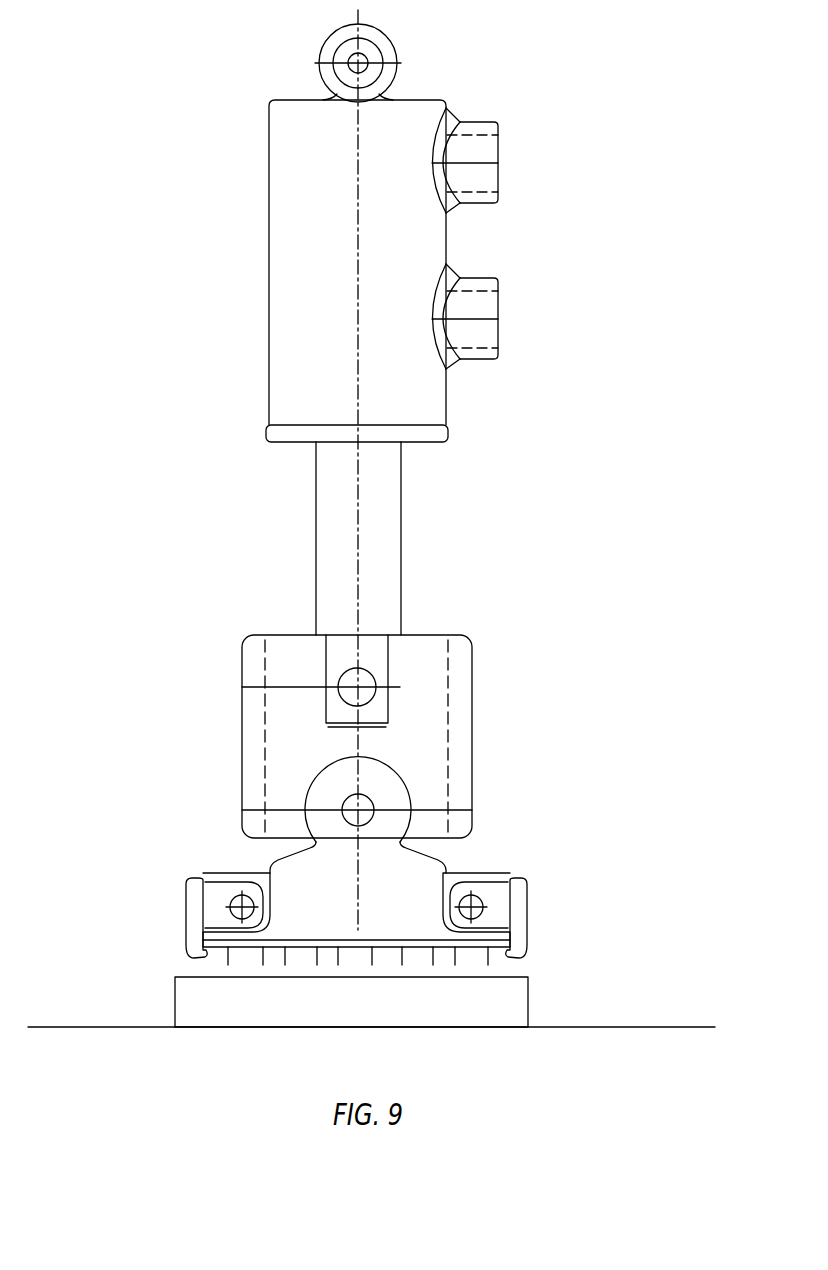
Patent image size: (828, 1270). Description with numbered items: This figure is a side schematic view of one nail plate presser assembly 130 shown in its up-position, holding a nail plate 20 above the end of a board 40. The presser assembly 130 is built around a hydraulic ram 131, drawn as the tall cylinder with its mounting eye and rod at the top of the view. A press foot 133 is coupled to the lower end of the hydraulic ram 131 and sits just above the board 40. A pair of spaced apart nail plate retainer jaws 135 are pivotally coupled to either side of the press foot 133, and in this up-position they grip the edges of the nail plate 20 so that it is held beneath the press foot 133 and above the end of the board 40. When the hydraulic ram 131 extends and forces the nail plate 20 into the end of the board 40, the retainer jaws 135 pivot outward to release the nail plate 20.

The nail plate presser assembly 130 is at (131, 326).
The hydraulic ram 131 is at (242, 700).
The press foot 133 is at (410, 897).
The nail plate retainer jaws 135 is at (193, 903).
The nail plate 20 is at (212, 965).
The board 40 is at (203, 1013).